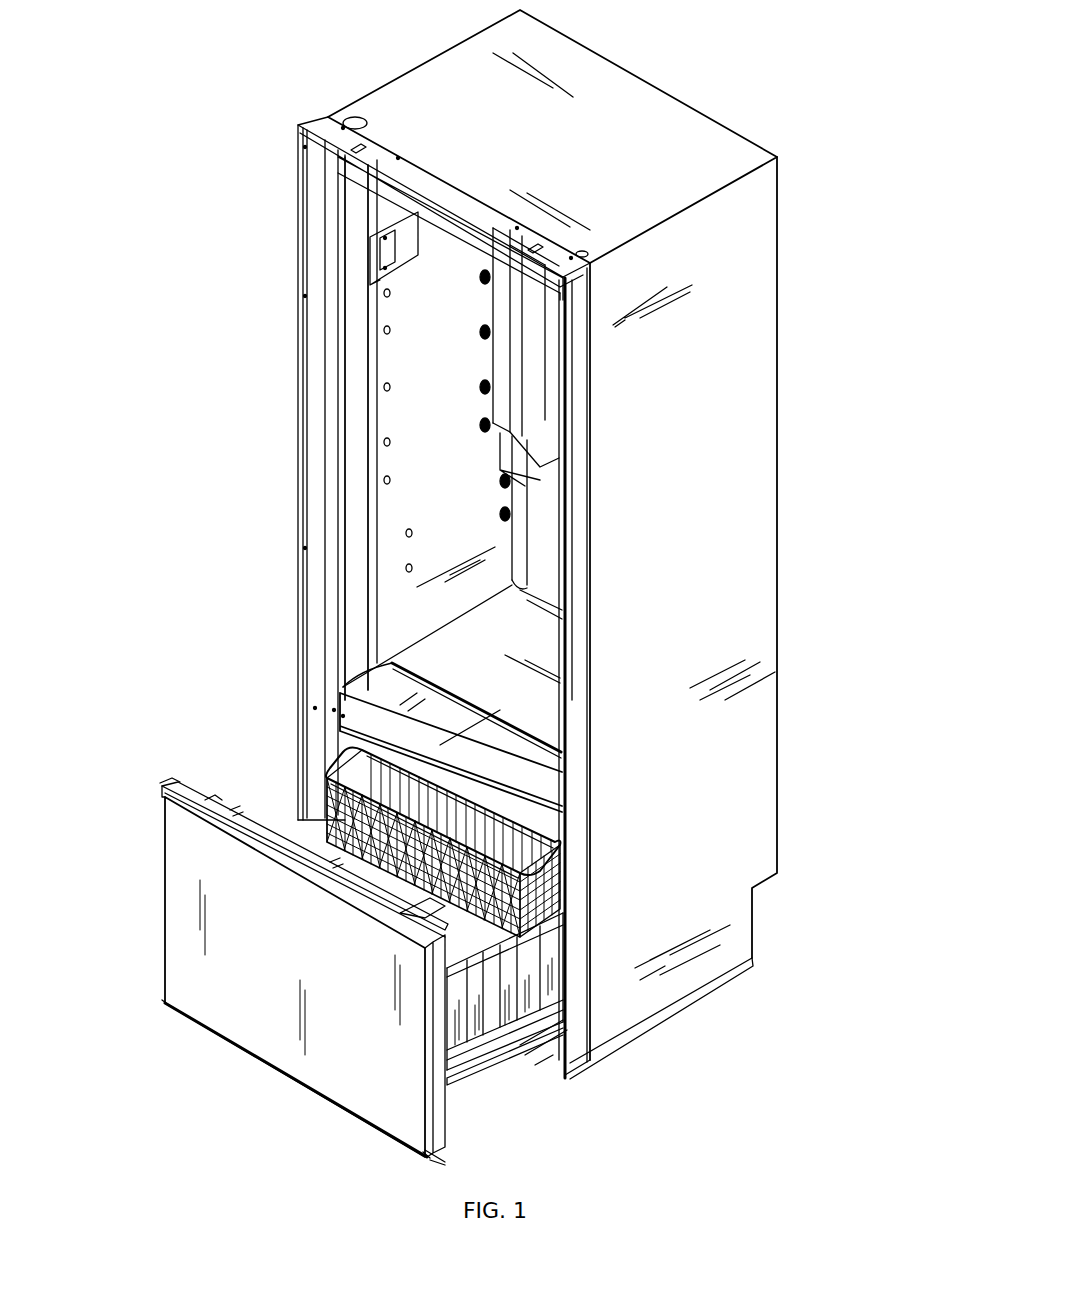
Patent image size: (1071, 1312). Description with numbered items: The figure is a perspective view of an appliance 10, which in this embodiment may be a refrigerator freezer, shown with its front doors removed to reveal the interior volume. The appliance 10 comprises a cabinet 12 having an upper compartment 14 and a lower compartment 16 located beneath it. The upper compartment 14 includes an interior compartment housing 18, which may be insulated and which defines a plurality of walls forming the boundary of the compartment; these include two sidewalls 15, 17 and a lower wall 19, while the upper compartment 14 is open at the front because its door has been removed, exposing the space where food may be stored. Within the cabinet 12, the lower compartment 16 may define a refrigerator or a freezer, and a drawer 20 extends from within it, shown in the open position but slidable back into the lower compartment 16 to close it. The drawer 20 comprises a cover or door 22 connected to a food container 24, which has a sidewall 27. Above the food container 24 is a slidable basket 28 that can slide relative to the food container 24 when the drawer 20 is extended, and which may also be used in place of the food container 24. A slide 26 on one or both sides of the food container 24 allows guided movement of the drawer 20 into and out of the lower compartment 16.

The appliance 10 is at (808, 70).
The cabinet 12 is at (730, 398).
The upper compartment 14 is at (390, 408).
The sidewall 15 is at (453, 449).
The lower compartment 16 is at (548, 1055).
The sidewall 17 is at (530, 547).
The interior compartment housing 18 is at (386, 598).
The lower wall 19 is at (497, 693).
The drawer 20 is at (122, 890).
The cover or door 22 is at (260, 1008).
The food container 24 is at (490, 1045).
The slide 26 is at (462, 1075).
The sidewall 27 is at (300, 820).
The slidable basket 28 is at (332, 772).